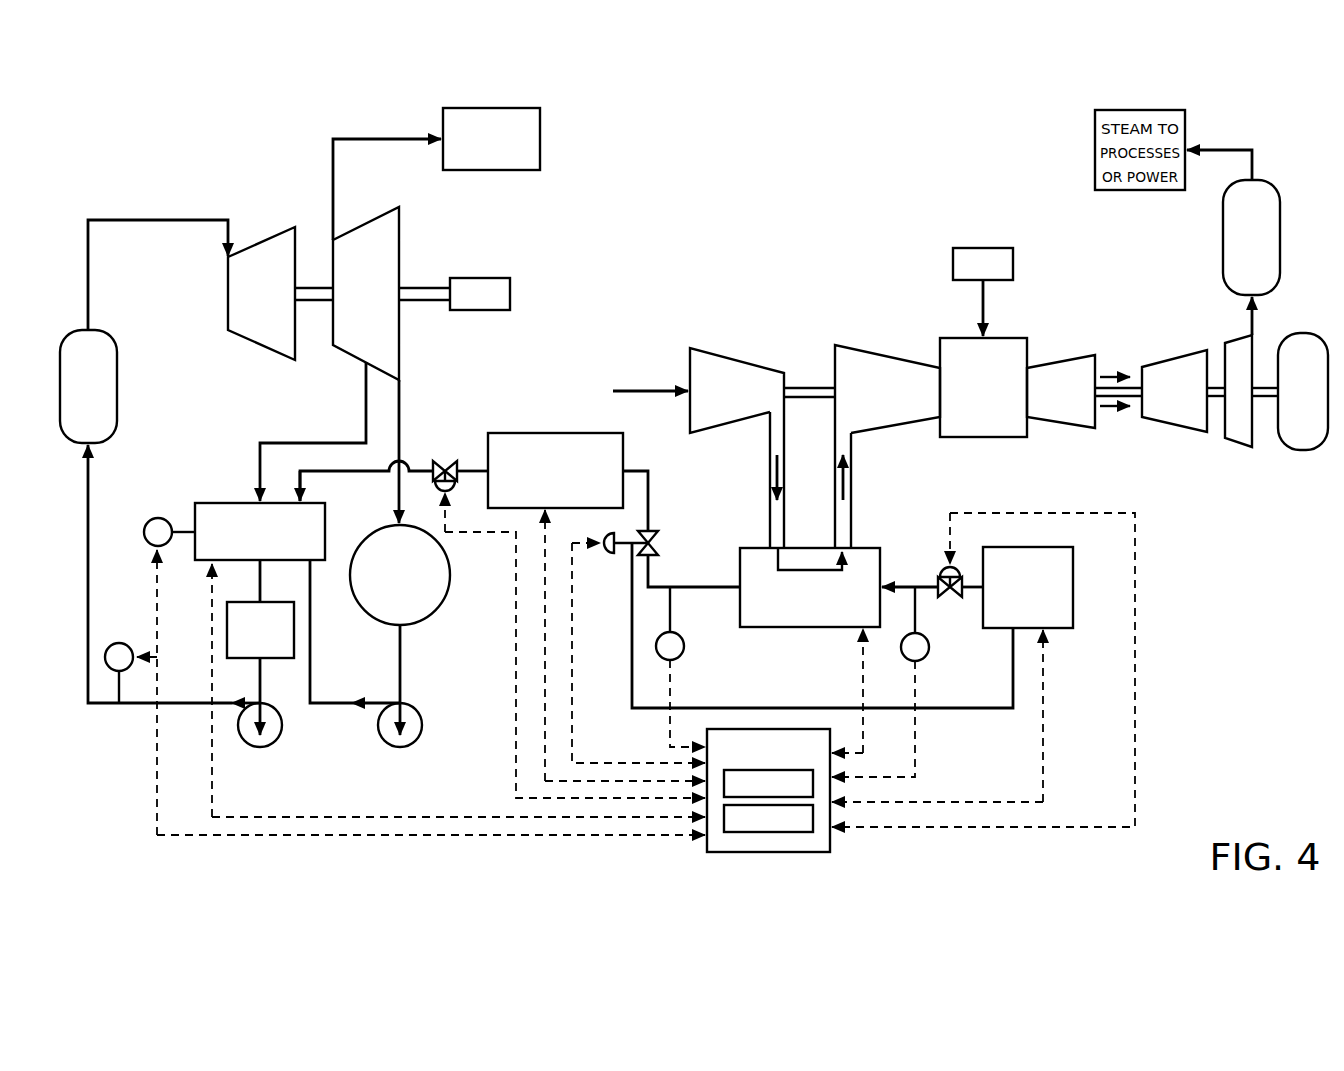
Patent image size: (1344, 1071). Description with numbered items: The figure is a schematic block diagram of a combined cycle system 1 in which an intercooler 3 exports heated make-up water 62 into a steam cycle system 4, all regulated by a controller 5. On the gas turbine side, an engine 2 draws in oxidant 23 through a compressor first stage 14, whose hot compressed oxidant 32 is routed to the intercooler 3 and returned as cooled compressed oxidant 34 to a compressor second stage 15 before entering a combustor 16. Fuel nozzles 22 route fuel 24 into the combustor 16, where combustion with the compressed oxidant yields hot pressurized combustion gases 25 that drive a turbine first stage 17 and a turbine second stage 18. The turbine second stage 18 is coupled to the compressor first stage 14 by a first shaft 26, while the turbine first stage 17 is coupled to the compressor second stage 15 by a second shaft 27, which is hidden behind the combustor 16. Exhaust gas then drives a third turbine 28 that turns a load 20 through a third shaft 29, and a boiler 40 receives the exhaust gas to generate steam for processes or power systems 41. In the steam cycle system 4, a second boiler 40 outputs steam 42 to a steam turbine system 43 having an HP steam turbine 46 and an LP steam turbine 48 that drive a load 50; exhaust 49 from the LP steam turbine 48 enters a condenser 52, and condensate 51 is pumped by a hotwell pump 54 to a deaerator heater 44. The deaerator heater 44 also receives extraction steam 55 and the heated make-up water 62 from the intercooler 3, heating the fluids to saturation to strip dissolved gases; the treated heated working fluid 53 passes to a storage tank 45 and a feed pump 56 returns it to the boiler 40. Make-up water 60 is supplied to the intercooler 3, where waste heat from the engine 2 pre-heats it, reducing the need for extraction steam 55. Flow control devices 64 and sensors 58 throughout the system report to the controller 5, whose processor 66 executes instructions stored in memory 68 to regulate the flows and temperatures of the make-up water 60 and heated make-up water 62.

The combined cycle system 1 is at (746, 218).
The engine 2 is at (1130, 264).
The intercooler 3 is at (809, 628).
The steam cycle system 4 is at (133, 165).
The controller 5 is at (776, 812).
The compressor first stage 14 is at (745, 360).
The compressor second stage 15 is at (893, 352).
The combustor 16 is at (984, 438).
The turbine first stage 17 is at (1065, 355).
The turbine second stage 18 is at (1176, 358).
The load 20 is at (1306, 334).
The fuel nozzle 22 is at (985, 248).
The oxidant 23 is at (646, 387).
The fuel 24 is at (983, 306).
The combustion gases 25 is at (1115, 374).
The first shaft 26 is at (810, 385).
The second shaft 27 is at (1004, 322).
The third turbine 28 is at (1240, 447).
The third shaft 29 is at (1262, 398).
The compressed oxidant 32 is at (776, 470).
The cooled compressed oxidant 34 is at (846, 490).
The boiler 40 is at (117, 387).
The processes or power systems 41 is at (541, 140).
The steam 42 is at (156, 220).
The steam turbine system 43 is at (312, 192).
The deaerator heater 44 is at (226, 503).
The storage tank 45 is at (270, 658).
The HP steam turbine 46 is at (262, 346).
The LP steam turbine 48 is at (352, 236).
The exhaust 49 is at (403, 418).
The load 50 is at (470, 279).
The condensate 51 is at (328, 702).
The condenser 52 is at (450, 586).
The heated working fluid 53 is at (90, 522).
The hotwell pump 54 is at (414, 744).
The steam 55 is at (366, 410).
The feed pump 56 is at (272, 748).
The sensor 58 is at (111, 644).
The make-up water 60 is at (1073, 584).
The heated make-up water 62 is at (555, 433).
The flow control device 64 is at (444, 461).
The processor 66 is at (740, 832).
The memory 68 is at (816, 795).